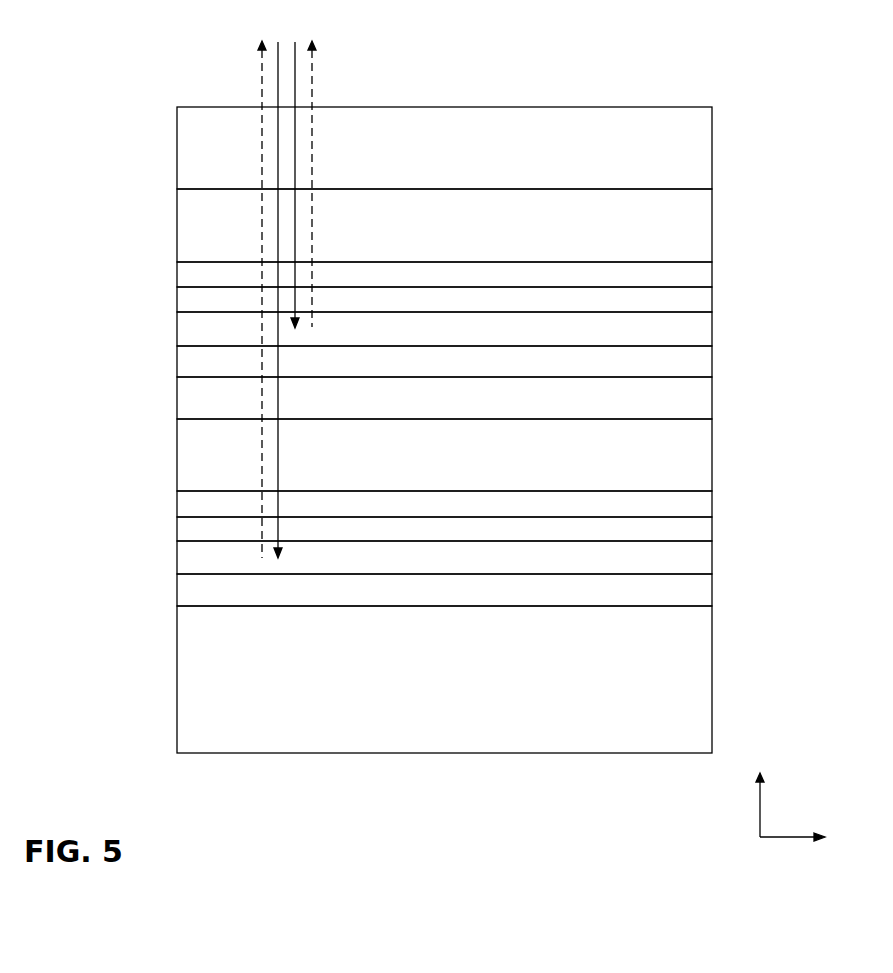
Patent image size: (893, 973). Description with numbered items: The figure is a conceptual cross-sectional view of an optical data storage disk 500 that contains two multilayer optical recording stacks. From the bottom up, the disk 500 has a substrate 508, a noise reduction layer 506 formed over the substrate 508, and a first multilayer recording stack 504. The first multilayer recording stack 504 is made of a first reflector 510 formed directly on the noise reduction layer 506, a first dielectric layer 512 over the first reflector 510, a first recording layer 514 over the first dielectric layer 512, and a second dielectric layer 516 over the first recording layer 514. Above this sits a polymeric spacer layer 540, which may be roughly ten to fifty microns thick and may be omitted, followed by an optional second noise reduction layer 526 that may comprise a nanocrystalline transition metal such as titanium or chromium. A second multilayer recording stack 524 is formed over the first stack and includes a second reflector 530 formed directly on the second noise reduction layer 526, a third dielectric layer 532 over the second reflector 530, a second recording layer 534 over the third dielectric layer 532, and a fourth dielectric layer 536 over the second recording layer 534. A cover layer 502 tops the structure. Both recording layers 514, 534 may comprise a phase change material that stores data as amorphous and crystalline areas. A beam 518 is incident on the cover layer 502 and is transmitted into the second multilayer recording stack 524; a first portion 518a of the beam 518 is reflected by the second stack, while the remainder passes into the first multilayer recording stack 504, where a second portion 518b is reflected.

The optical data storage disk 500 is at (120, 70).
The cover layer 502 is at (195, 148).
The first multilayer recording stack 504 is at (719, 418).
The noise reduction layer 506 is at (195, 588).
The substrate 508 is at (195, 675).
The first reflector 510 is at (195, 555).
The first dielectric layer 512 is at (195, 527).
The first recording layer 514 is at (195, 500).
The second dielectric layer 516 is at (195, 458).
The beam 518 is at (296, 33).
The first portion of beam 518a is at (318, 76).
The second portion of beam 518b is at (262, 75).
The second multilayer recording stack 524 is at (719, 188).
The second noise reduction layer 526 is at (195, 362).
The second reflector 530 is at (195, 327).
The third dielectric layer 532 is at (195, 298).
The second recording layer 534 is at (195, 270).
The fourth dielectric layer 536 is at (195, 228).
The polymeric spacer layer 540 is at (195, 395).